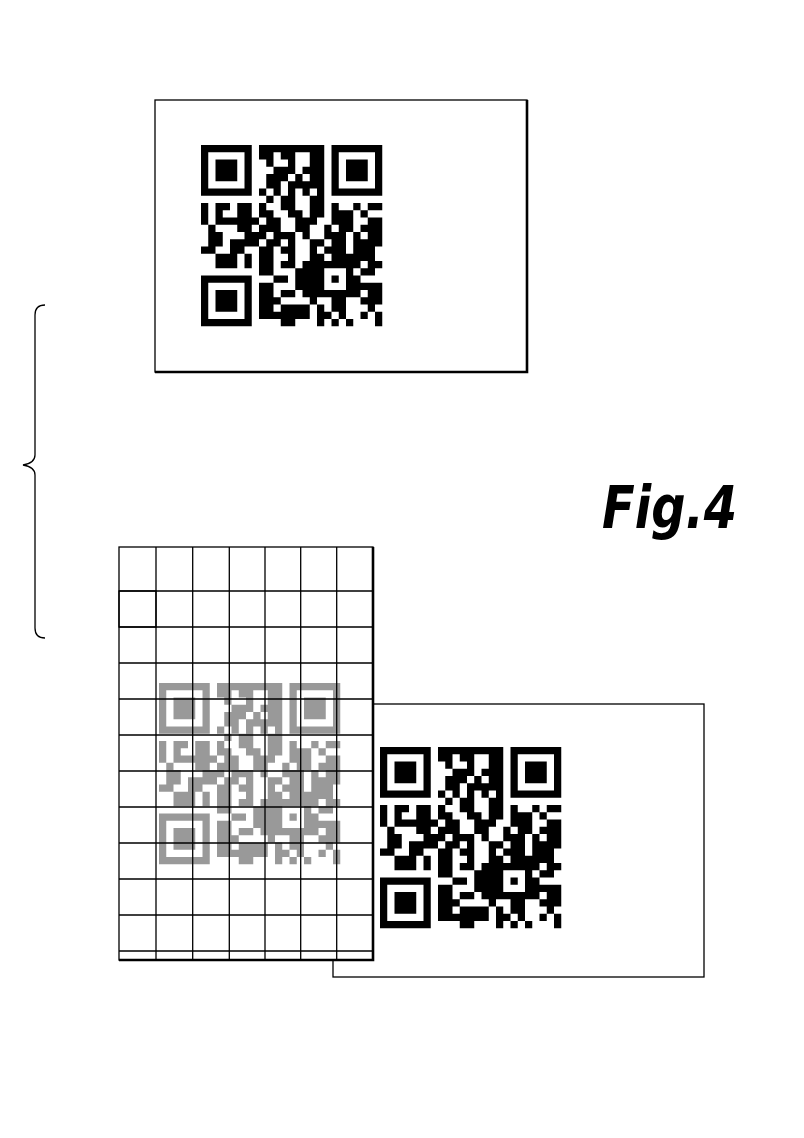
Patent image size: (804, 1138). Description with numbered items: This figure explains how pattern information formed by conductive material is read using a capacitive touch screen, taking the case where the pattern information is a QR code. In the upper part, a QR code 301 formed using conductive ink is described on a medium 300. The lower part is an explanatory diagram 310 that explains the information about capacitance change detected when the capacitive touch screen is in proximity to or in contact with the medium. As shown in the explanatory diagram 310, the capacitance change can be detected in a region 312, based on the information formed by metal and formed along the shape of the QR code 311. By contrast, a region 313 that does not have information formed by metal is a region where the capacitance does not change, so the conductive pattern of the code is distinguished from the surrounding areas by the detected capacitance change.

The medium 300 is at (429, 97).
The QR code 301 is at (386, 176).
The explanatory diagram 310 is at (221, 713).
The QR code 311 is at (593, 715).
The region 312 is at (157, 709).
The region 313 is at (155, 615).